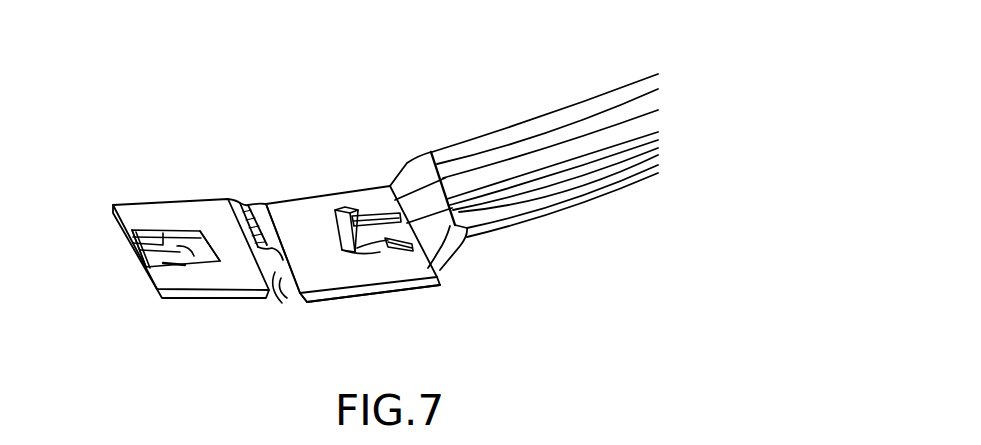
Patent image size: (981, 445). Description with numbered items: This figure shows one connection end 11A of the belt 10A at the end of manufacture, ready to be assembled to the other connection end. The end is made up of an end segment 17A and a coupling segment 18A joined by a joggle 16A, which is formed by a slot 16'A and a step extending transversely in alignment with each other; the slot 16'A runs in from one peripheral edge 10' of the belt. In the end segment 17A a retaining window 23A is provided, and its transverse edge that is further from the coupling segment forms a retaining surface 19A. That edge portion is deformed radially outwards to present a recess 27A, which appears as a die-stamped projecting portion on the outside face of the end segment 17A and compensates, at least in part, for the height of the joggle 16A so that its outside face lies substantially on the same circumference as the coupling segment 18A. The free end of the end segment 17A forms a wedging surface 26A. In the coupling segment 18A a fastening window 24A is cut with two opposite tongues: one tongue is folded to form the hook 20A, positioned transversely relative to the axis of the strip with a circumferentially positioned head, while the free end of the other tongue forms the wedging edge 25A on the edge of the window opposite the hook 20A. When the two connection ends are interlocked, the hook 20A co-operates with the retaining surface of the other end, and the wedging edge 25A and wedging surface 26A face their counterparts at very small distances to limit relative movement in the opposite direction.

The belt 10A is at (607, 193).
The fastening window 24A is at (440, 180).
The coupling segment 18A is at (318, 205).
The end segment 17A is at (184, 210).
The joggle 16A is at (235, 188).
The slot 16'A is at (295, 309).
The peripheral edge of the belt 10' is at (332, 316).
The connection end 11A is at (386, 298).
The hook 20A is at (355, 244).
The wedging edge 25A is at (453, 259).
The recess 27A is at (133, 230).
The wedging surface 26A is at (128, 251).
The retaining surface 19A is at (178, 256).
The retaining window 23A is at (206, 258).